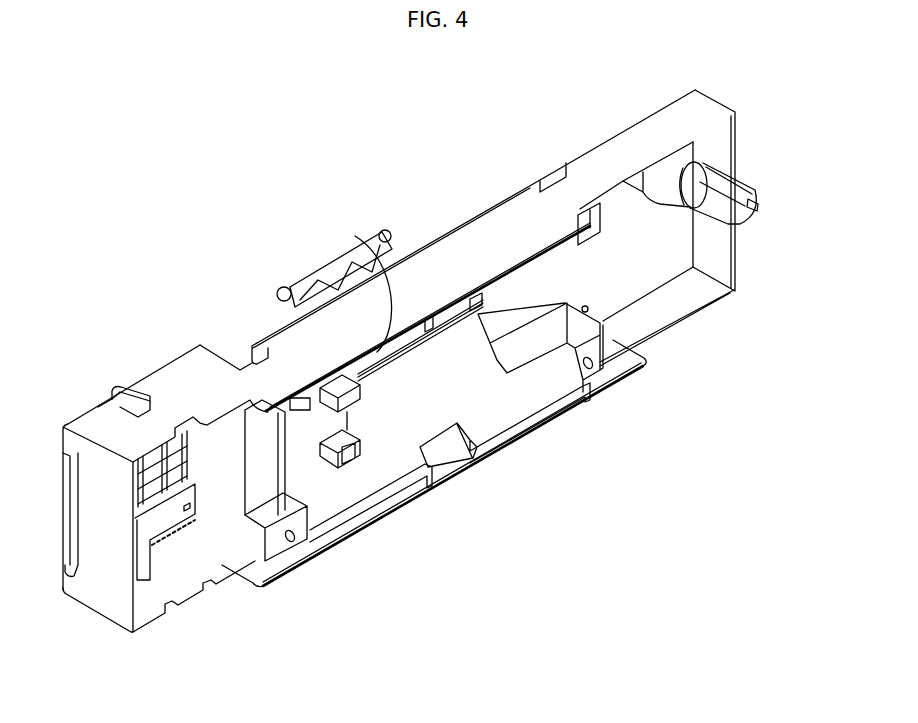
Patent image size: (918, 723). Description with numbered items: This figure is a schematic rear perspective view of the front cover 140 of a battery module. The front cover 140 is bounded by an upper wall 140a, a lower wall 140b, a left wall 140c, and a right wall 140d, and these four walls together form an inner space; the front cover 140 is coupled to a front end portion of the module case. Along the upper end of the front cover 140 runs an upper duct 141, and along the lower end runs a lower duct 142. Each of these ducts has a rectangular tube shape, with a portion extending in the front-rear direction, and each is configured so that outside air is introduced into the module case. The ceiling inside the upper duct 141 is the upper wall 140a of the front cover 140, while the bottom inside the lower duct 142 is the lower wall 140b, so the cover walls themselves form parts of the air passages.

The front cover 140 is at (275, 153).
The upper wall 140a is at (467, 240).
The lower wall 140b is at (312, 557).
The left wall 140c is at (735, 241).
The right wall 140d is at (107, 598).
The upper duct 141 is at (357, 263).
The lower duct 142 is at (400, 503).